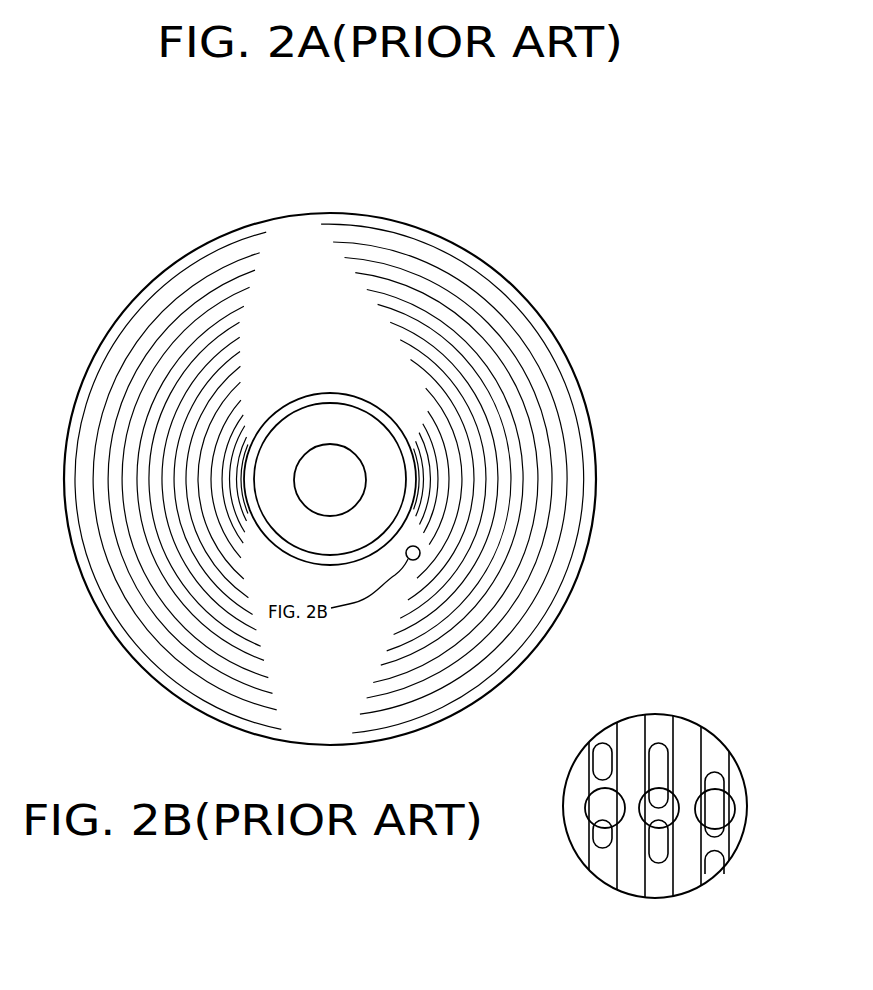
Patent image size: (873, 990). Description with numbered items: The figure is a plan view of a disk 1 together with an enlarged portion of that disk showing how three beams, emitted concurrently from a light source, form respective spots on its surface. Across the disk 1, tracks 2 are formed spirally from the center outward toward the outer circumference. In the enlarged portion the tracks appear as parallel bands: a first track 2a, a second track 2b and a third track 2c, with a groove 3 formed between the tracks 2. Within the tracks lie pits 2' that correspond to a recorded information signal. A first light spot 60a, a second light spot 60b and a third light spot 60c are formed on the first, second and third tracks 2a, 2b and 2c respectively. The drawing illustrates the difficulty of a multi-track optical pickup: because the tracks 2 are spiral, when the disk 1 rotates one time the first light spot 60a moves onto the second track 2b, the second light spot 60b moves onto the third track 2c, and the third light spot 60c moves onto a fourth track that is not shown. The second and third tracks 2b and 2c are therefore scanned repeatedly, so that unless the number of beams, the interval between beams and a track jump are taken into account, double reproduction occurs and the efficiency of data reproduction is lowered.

In FIG. 2A, the disk 1 is at (575, 310).
In FIG. 2B, the tracks 2 is at (660, 732).
In FIG. 2B, the first track 2a is at (605, 735).
In FIG. 2B, the second track 2b is at (655, 735).
In FIG. 2B, the third track 2c is at (712, 740).
In FIG. 2B, the pits 2' is at (575, 880).
In FIG. 2B, the groove 3 is at (632, 872).
In FIG. 2B, the first light spot 60a is at (587, 817).
In FIG. 2B, the second light spot 60b is at (672, 815).
In FIG. 2B, the third light spot 60c is at (733, 822).